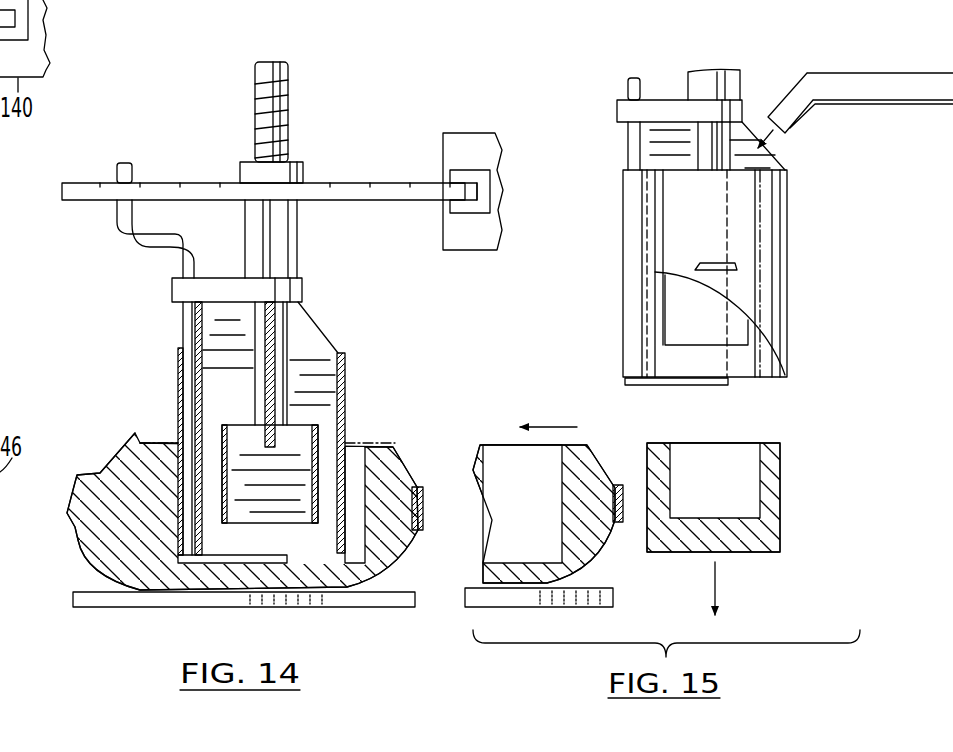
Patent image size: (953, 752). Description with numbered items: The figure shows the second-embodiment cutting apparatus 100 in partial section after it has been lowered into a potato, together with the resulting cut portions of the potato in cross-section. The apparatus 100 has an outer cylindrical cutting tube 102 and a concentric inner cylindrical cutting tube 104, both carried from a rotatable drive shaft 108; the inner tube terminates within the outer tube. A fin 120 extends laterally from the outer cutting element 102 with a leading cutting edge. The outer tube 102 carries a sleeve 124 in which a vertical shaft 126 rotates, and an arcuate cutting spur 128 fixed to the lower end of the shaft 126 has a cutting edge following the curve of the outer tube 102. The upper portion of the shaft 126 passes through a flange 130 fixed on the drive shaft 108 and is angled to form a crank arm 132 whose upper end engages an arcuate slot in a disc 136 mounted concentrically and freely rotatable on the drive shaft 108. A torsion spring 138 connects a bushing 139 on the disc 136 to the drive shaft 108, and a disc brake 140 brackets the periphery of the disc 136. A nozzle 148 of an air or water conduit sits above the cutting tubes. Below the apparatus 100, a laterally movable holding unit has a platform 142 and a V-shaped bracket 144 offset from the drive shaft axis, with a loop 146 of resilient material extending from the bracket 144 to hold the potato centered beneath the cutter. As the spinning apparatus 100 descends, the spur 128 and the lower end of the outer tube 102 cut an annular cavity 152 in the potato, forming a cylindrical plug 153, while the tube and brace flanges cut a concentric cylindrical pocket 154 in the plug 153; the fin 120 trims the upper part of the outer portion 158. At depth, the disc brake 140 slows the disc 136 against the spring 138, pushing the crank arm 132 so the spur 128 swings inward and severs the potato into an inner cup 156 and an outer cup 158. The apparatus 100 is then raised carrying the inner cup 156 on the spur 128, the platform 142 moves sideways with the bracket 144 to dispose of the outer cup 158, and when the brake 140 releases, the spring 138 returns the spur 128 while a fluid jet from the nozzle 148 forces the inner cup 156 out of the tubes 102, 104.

In FIG. 14, the cutting apparatus 100 is at (150, 343).
In FIG. 15, the cutting apparatus 100 is at (808, 232).
In FIG. 15, the outer cylindrical cutting tube 102 is at (775, 347).
In FIG. 15, the inner cylindrical cutting tube 104 is at (732, 322).
In FIG. 14, the rotatable drive shaft 108 is at (286, 82).
In FIG. 15, the fin 120 is at (708, 263).
In FIG. 14, the sleeve 124 is at (177, 375).
In FIG. 15, the sleeve 124 is at (623, 295).
In FIG. 15, the vertical shaft 126 is at (628, 145).
In FIG. 15, the arcuate cutting spur 128 is at (710, 387).
In FIG. 14, the flange 130 is at (172, 289).
In FIG. 15, the flange 130 is at (617, 110).
In FIG. 14, the crank arm 132 is at (115, 228).
In FIG. 14, the disc 136 is at (369, 193).
In FIG. 14, the torsion spring 138 is at (288, 120).
In FIG. 14, the bushing 139 is at (302, 173).
In FIG. 14, the disc brake 140 is at (473, 237).
In FIG. 14, the platform 142 is at (143, 600).
In FIG. 15, the platform 142 is at (547, 597).
In FIG. 14, the V-shaped bracket 144 is at (72, 527).
In FIG. 14, the loop of resilient material 146 is at (423, 503).
In FIG. 15, the loop of resilient material 146 is at (618, 503).
In FIG. 15, the nozzle 148 is at (843, 77).
In FIG. 14, the annular cavity 152 is at (355, 475).
In FIG. 14, the cylindrical plug 153 is at (330, 537).
In FIG. 14, the cylindrical pocket 154 is at (300, 532).
In FIG. 15, the inner cup 156 is at (773, 470).
In FIG. 14, the outer cup 158 is at (393, 465).
In FIG. 15, the outer cup 158 is at (605, 465).